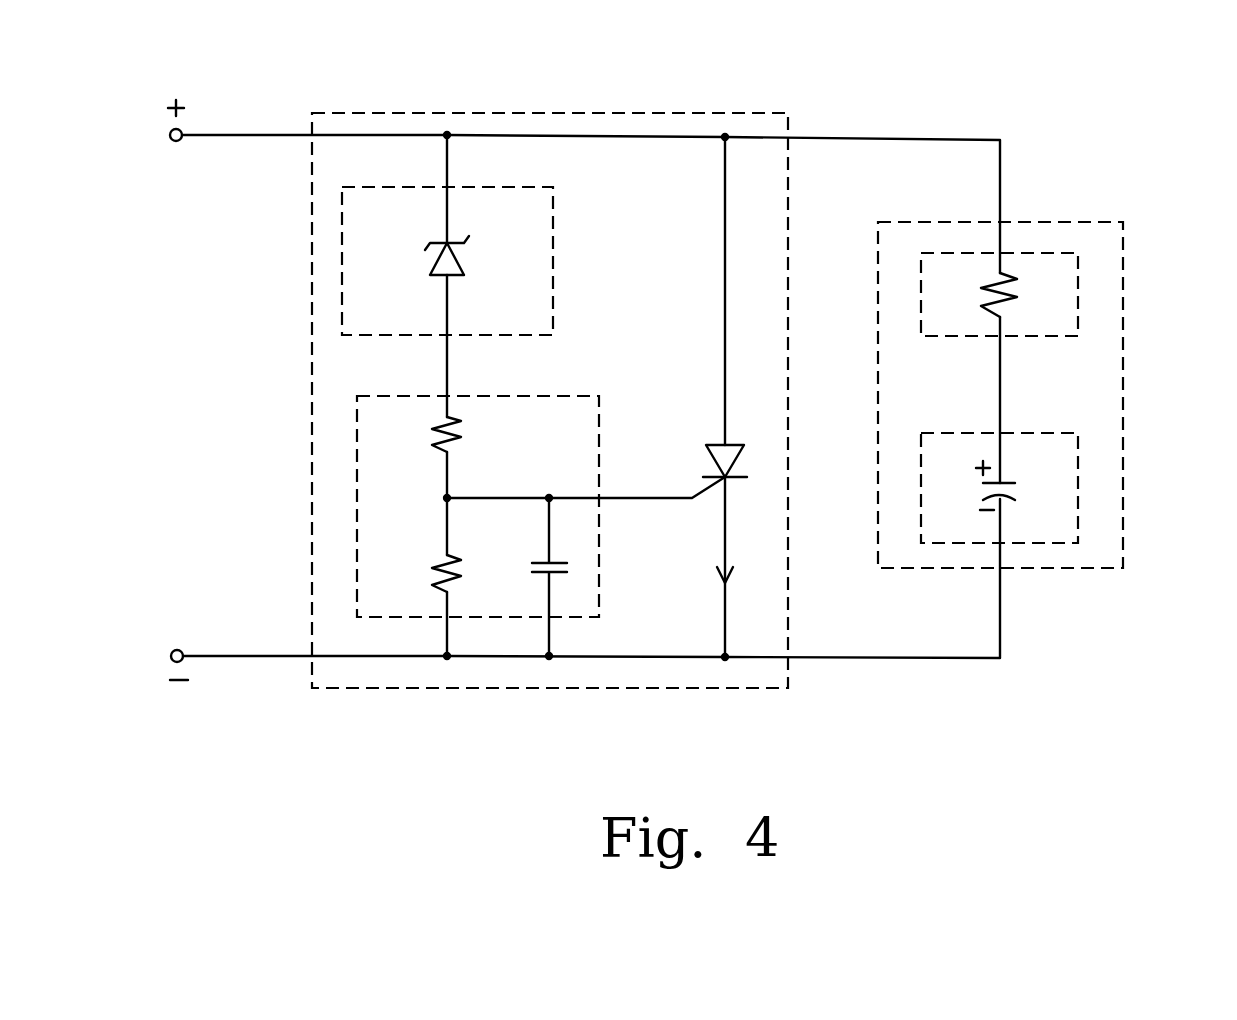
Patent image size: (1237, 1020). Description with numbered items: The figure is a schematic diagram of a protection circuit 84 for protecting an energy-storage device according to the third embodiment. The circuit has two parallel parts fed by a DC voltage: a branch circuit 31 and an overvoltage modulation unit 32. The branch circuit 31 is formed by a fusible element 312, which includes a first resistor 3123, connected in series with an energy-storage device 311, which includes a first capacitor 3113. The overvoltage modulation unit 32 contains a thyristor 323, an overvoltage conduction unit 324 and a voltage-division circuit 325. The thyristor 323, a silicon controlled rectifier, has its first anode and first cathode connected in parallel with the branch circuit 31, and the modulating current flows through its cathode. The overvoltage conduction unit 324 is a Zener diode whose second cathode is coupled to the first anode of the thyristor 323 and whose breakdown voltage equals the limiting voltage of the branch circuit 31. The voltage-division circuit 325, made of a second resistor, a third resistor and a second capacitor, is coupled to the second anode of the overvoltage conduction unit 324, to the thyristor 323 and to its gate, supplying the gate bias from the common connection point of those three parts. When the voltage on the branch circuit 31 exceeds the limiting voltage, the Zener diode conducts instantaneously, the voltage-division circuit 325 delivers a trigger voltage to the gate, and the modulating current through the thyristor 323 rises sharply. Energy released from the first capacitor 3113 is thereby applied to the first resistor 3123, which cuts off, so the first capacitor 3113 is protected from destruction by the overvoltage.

The protection circuit 84 is at (797, 39).
The overvoltage modulation unit 32 is at (368, 112).
The overvoltage conduction unit 324 is at (487, 187).
The voltage-division circuit 325 is at (357, 438).
The thyristor 323 is at (720, 438).
The branch circuit 31 is at (1045, 220).
The fusible element 312 is at (1080, 278).
The first resistor 3123 is at (1015, 302).
The energy-storage device 311 is at (1080, 462).
The first capacitor 3113 is at (1017, 490).